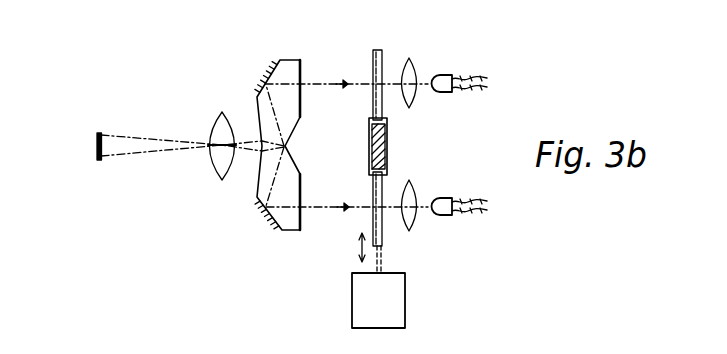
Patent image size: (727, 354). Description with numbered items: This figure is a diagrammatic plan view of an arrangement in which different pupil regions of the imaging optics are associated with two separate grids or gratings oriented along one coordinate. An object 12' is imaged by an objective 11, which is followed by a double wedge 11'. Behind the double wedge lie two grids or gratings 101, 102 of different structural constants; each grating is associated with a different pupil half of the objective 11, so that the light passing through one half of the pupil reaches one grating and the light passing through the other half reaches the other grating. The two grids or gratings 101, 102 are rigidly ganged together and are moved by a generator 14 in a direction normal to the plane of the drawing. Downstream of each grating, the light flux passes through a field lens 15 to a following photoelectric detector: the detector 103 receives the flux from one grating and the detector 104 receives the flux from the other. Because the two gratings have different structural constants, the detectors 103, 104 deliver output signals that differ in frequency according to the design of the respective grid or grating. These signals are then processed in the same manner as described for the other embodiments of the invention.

The object 12' is at (71, 147).
The objective 11 is at (206, 149).
The double wedge 11' is at (257, 145).
The grid or grating 102 is at (372, 63).
The grid or grating 101 is at (372, 215).
The field lens 15 is at (422, 46).
The photoelectric detector 104 is at (438, 76).
The photoelectric detector 103 is at (438, 199).
The generator 14 is at (386, 315).